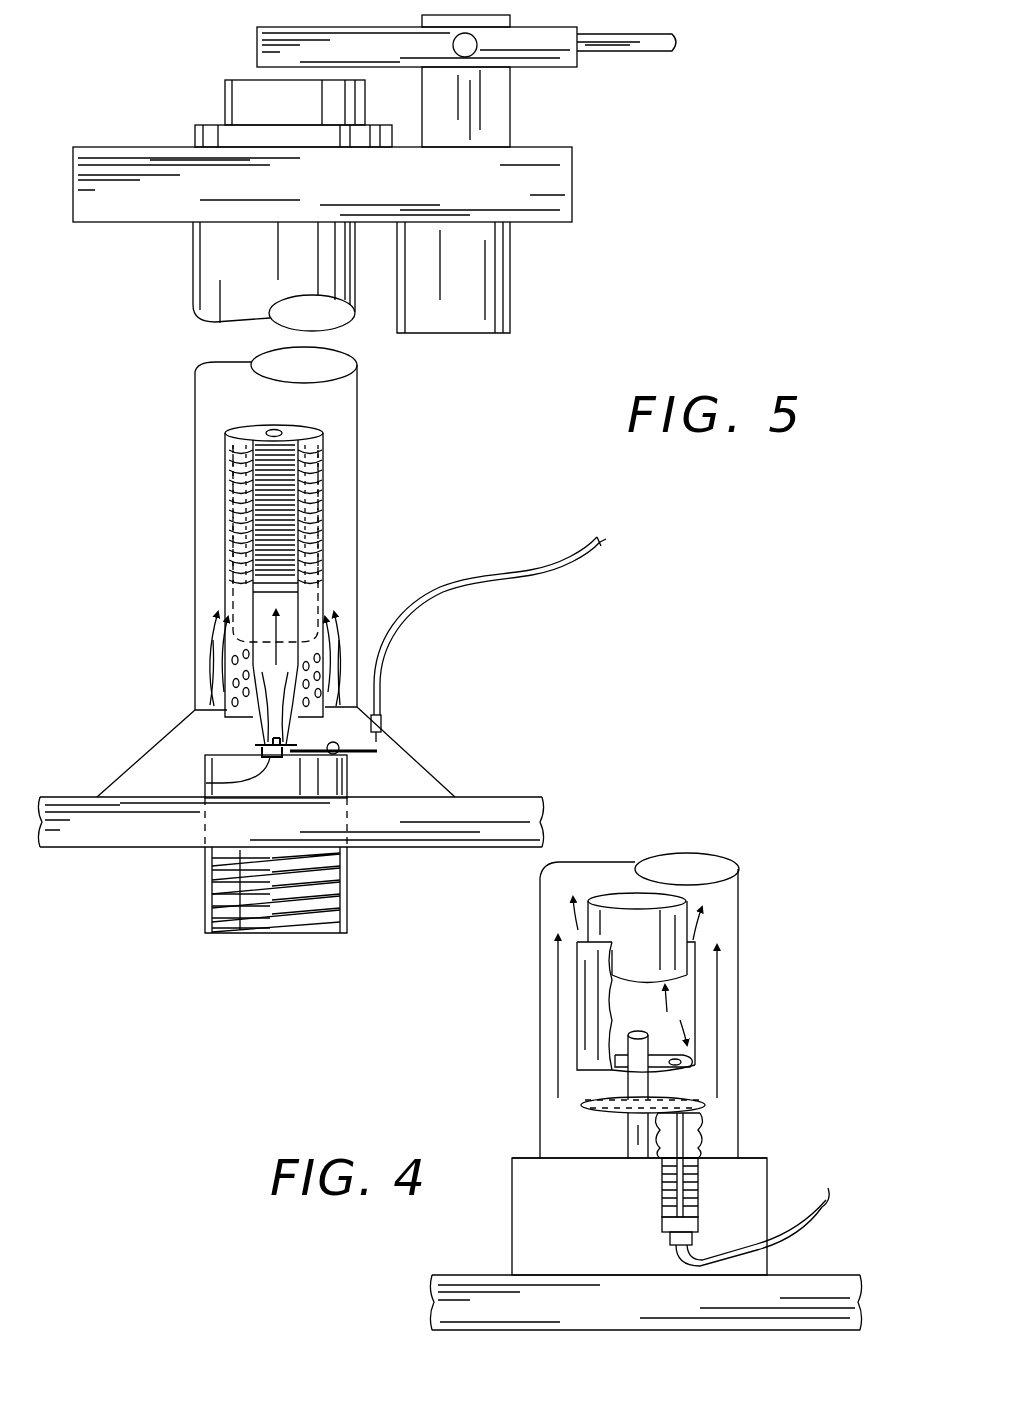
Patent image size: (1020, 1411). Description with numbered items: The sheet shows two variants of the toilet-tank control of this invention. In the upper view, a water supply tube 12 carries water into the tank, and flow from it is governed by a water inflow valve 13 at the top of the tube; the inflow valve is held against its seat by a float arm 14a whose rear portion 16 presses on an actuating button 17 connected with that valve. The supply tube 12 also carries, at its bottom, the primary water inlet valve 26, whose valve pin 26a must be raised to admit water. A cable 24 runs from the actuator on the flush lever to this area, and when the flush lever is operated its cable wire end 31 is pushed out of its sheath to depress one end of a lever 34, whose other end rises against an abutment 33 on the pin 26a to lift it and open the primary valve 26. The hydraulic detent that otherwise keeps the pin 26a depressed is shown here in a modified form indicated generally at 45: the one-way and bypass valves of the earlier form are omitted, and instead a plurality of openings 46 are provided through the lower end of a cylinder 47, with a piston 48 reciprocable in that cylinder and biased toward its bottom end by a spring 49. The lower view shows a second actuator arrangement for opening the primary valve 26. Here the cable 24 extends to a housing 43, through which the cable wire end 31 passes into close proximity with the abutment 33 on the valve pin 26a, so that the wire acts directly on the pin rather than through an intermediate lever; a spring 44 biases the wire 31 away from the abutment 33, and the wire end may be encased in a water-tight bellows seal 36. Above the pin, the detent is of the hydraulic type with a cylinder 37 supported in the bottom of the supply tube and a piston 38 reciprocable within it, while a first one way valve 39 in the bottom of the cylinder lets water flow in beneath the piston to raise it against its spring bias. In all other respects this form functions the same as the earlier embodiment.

In FIG. 5, the water supply tube 12 is at (195, 413).
In FIG. 5, the water inflow valve 13 is at (118, 147).
In FIG. 5, the float arm 14a is at (627, 53).
In FIG. 5, the rear portion of the float arm 16 is at (257, 47).
In FIG. 5, the actuating button 17 is at (225, 105).
In FIG. 5, the cable 24 is at (493, 580).
In FIG. 4, the cable 24 is at (830, 1198).
In FIG. 5, the primary water inlet valve 26 is at (160, 754).
In FIG. 4, the primary water inlet valve 26 is at (494, 1162).
In FIG. 5, the valve pin 26a is at (282, 773).
In FIG. 4, the valve pin 26a is at (627, 1135).
In FIG. 5, the cable wire end 31 is at (388, 738).
In FIG. 4, the cable wire end 31 is at (680, 1140).
In FIG. 5, the abutment 33 is at (205, 778).
In FIG. 4, the abutment 33 is at (578, 1115).
In FIG. 5, the lever 34 is at (367, 750).
In FIG. 4, the bellows seal 36 is at (700, 1130).
In FIG. 4, the cylinder 37 is at (738, 920).
In FIG. 4, the piston 38 is at (670, 900).
In FIG. 4, the first one way valve 39 is at (665, 1048).
In FIG. 4, the housing 43 is at (700, 1225).
In FIG. 4, the spring 44 is at (700, 1187).
In FIG. 5, the modified hydraulic mechanism 45 is at (183, 656).
In FIG. 5, the openings 46 is at (233, 683).
In FIG. 5, the cylinder 47 is at (323, 520).
In FIG. 5, the piston 48 is at (307, 597).
In FIG. 5, the spring 49 is at (317, 462).